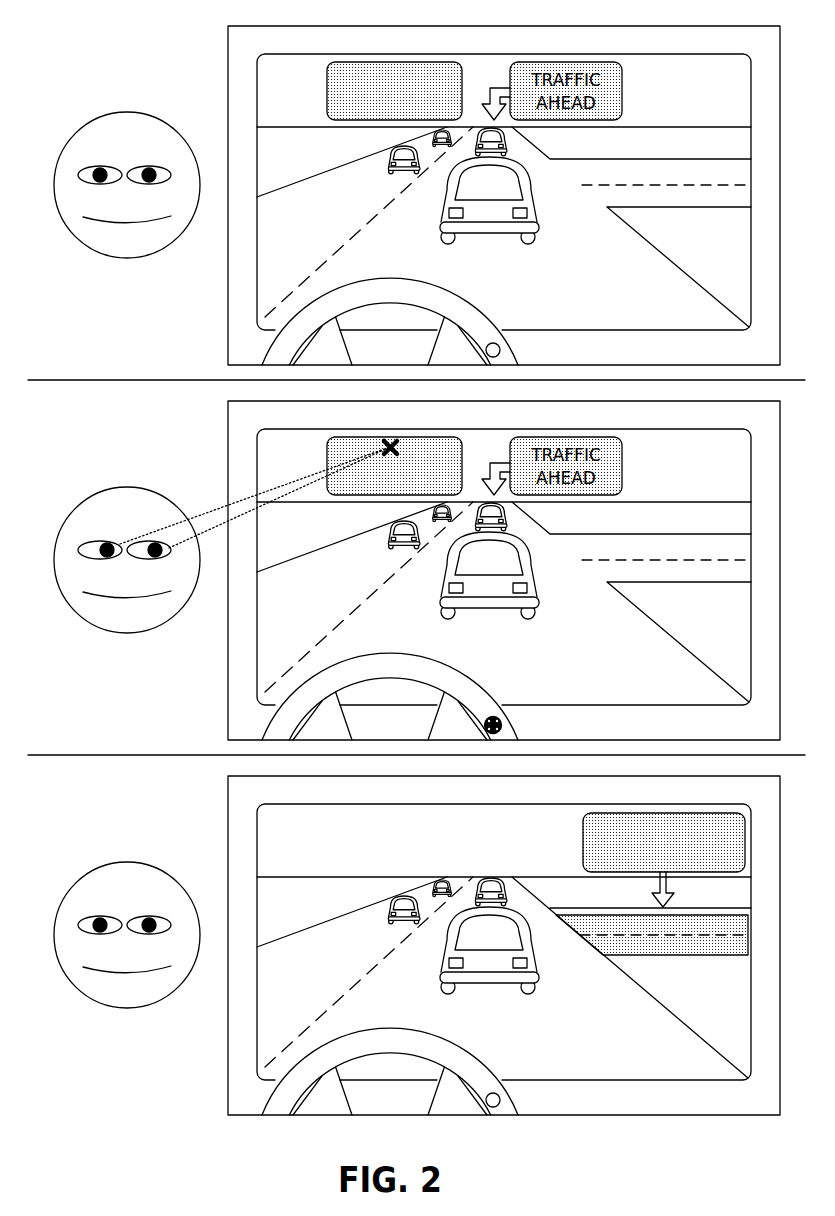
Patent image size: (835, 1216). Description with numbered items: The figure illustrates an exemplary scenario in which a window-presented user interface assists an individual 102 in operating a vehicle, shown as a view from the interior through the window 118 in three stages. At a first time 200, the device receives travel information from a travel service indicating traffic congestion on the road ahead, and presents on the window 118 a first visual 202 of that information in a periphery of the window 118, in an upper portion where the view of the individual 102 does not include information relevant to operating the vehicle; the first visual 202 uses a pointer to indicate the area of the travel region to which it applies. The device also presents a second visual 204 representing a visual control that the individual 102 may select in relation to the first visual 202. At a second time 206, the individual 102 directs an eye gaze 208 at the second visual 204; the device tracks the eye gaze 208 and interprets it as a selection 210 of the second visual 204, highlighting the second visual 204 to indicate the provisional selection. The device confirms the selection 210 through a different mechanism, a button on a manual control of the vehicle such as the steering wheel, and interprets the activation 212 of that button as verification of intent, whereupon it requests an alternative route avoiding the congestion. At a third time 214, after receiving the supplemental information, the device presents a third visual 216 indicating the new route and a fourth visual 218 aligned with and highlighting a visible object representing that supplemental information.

The individual 102 is at (86, 128).
The window 118 is at (316, 53).
The first time 200 is at (83, 34).
The first visual 202 is at (622, 86).
The second visual 204 is at (327, 87).
The second time 206 is at (83, 408).
The eye gaze 208 is at (226, 506).
The selection 210 is at (396, 438).
The activation 212 is at (502, 716).
The third time 214 is at (83, 783).
The third visual 216 is at (583, 838).
The fourth visual 218 is at (612, 913).